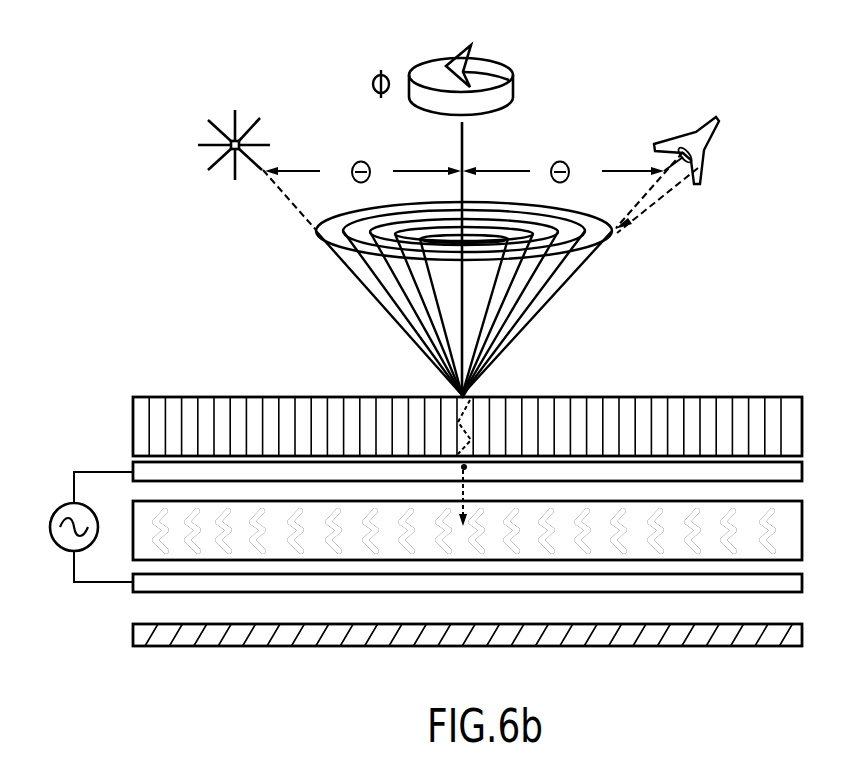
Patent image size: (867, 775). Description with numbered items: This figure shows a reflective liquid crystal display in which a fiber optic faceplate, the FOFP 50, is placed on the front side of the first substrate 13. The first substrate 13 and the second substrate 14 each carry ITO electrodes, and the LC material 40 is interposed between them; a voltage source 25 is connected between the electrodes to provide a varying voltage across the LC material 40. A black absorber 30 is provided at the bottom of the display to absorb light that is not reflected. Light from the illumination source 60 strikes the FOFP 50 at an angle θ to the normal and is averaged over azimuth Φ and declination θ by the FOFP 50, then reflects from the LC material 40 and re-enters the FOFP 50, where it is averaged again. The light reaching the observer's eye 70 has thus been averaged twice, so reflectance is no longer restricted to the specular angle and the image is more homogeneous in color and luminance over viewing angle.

The illumination source 60 is at (226, 134).
The observer's eye 70 is at (697, 131).
The FOFP 50 is at (133, 406).
The first substrate 13 is at (133, 468).
The LC material 40 is at (133, 507).
The voltage source 25 is at (57, 543).
The second substrate 14 is at (132, 589).
The black absorber 30 is at (133, 638).